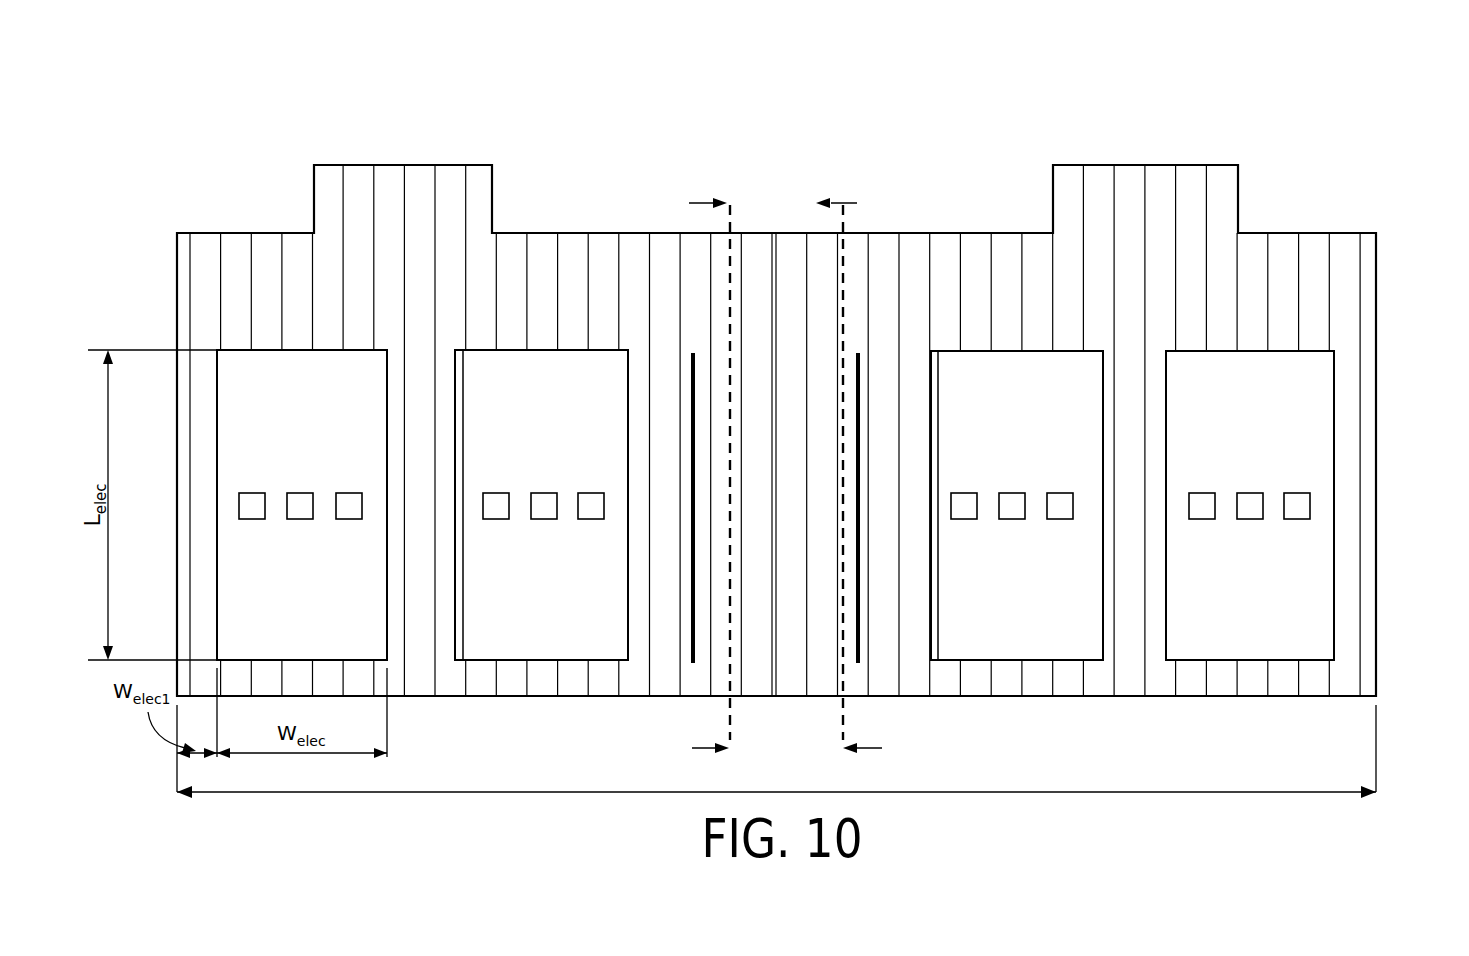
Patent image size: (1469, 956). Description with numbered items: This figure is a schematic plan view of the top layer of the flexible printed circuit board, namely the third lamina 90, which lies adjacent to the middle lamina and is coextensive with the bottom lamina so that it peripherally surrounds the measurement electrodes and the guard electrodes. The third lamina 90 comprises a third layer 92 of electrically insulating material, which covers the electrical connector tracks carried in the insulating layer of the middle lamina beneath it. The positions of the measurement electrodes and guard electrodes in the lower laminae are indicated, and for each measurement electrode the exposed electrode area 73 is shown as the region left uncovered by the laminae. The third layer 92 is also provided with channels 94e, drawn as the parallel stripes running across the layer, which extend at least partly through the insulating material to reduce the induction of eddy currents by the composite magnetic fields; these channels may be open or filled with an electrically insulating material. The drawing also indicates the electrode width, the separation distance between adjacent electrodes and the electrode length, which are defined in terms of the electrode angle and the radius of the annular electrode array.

The third lamina 90 is at (810, 398).
The third layer of electrically insulating material 92 is at (1370, 328).
The exposed electrode area 73 is at (1325, 463).
The channels 94e is at (1363, 523).